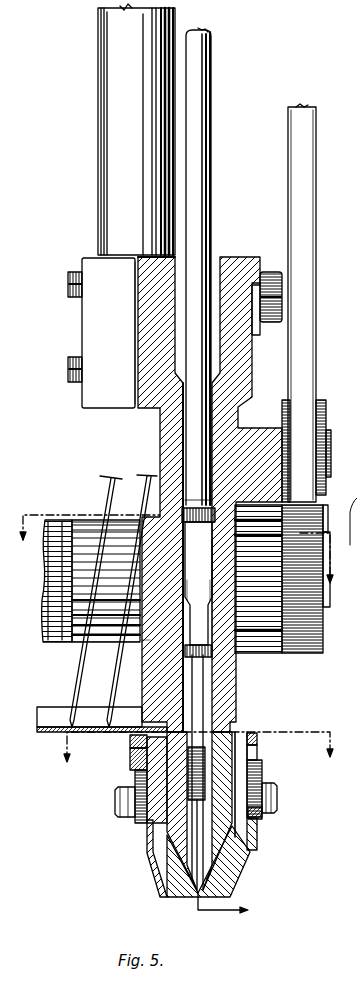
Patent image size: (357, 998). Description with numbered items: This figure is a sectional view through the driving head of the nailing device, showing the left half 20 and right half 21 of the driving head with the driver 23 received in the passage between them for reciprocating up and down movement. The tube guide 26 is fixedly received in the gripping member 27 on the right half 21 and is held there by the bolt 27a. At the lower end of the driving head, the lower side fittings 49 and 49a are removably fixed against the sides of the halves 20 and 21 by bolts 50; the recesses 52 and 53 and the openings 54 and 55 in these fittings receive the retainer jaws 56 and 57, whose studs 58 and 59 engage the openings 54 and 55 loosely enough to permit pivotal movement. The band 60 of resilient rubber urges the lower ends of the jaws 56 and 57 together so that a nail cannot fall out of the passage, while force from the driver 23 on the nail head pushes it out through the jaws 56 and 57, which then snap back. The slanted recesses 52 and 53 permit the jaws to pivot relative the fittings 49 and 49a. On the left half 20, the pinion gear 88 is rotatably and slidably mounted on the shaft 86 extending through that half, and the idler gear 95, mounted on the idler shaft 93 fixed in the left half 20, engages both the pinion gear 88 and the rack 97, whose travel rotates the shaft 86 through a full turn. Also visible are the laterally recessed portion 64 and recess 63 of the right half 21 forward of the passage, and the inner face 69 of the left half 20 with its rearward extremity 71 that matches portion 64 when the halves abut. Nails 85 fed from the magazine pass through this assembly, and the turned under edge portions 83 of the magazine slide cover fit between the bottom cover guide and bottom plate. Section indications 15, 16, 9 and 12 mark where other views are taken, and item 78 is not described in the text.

The tube guide 26 is at (106, 147).
The gripping member 27 is at (90, 270).
The bolt 27a is at (68, 280).
The rack 97 is at (310, 318).
The idler gear 95 is at (320, 401).
The driver 23 is at (205, 414).
The turned under edge portions 83 is at (107, 488).
The laterally recessed portion 64 is at (143, 527).
The rearward extremity 71 is at (242, 551).
The inner face 69 is at (228, 616).
The idler shaft 93 is at (327, 480).
The pinion gear 88 is at (318, 612).
The shaft 86 is at (63, 649).
The recess 63 is at (140, 648).
The nails 85 is at (183, 632).
The right half 21 is at (142, 696).
The gasket 78 is at (53, 733).
The opening 55 is at (131, 741).
The stud 59 is at (131, 758).
The lower side fitting 49a is at (128, 790).
The recess 53 is at (136, 823).
The retainer jaw 57 is at (155, 857).
The left half 20 is at (239, 706).
The stud 58 is at (263, 735).
The opening 54 is at (262, 749).
The lower side fitting 49 is at (262, 771).
The bolt 50 is at (279, 797).
The recess 52 is at (262, 813).
The band 60 is at (257, 840).
The retainer jaw 56 is at (240, 856).
The section line 16- 16 is at (186, 558).
The section line 15- 15 is at (199, 757).
The view arrow 9 is at (232, 906).
The view reference 12 is at (348, 570).